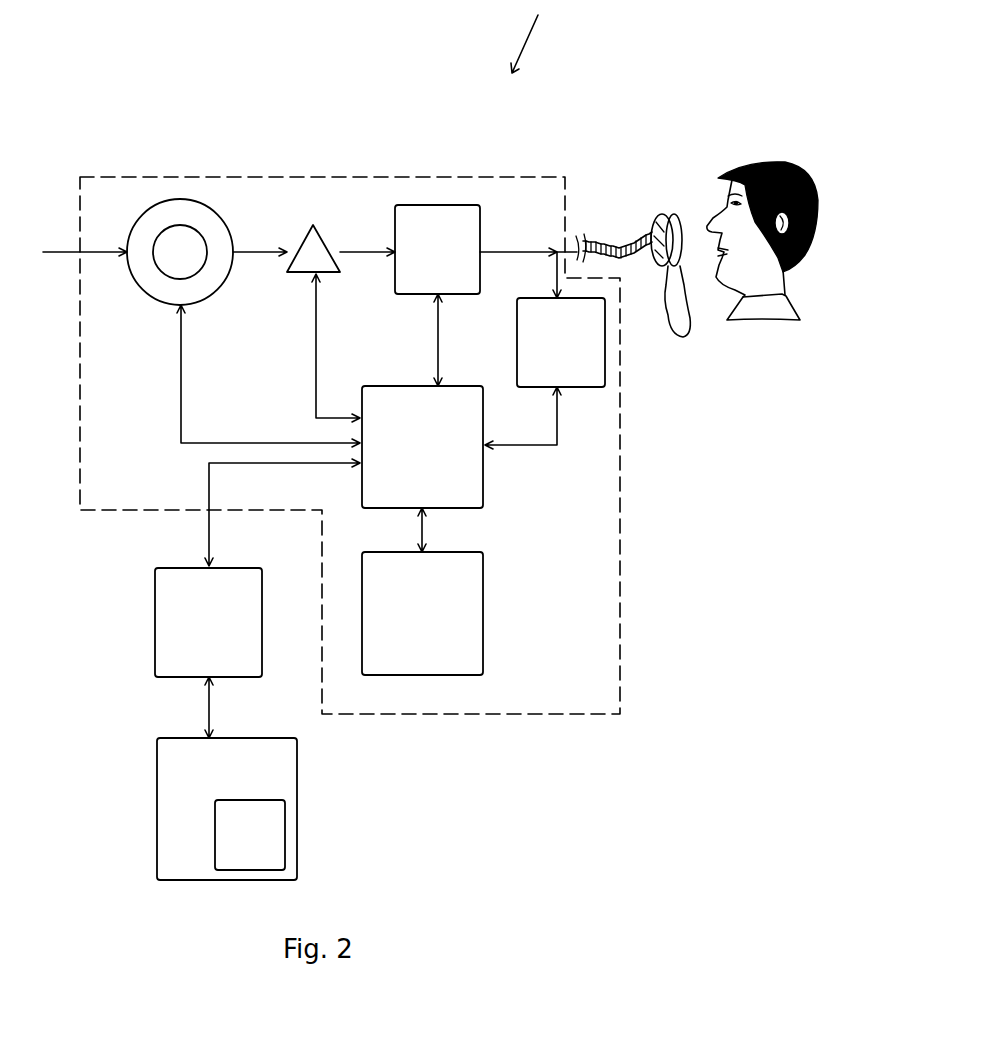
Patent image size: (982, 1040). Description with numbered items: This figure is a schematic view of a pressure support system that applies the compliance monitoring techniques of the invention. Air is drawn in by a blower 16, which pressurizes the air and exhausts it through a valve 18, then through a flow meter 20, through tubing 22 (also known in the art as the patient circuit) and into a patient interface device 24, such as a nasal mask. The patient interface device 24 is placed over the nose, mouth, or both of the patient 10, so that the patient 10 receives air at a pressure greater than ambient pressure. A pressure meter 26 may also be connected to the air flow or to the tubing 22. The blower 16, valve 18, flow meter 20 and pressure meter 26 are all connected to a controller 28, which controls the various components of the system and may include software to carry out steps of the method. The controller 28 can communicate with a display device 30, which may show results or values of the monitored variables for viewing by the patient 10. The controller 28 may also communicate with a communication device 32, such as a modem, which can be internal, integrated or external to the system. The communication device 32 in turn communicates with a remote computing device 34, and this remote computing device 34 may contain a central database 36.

The patient 10 is at (779, 135).
The blower 16 is at (214, 141).
The valve 18 is at (318, 245).
The flow meter 20 is at (437, 249).
The tubing 22 is at (609, 235).
The patient interface device 24 is at (660, 215).
The pressure meter 26 is at (561, 342).
The controller 28 is at (422, 447).
The display device 30 is at (422, 613).
The communication device 32 is at (208, 622).
The remote computing device 34 is at (227, 809).
The central database 36 is at (342, 828).